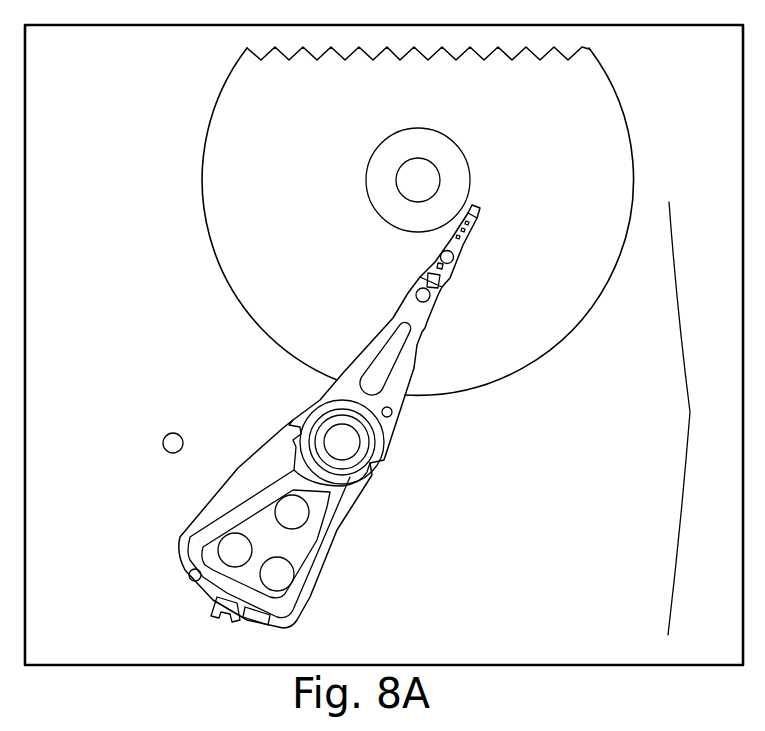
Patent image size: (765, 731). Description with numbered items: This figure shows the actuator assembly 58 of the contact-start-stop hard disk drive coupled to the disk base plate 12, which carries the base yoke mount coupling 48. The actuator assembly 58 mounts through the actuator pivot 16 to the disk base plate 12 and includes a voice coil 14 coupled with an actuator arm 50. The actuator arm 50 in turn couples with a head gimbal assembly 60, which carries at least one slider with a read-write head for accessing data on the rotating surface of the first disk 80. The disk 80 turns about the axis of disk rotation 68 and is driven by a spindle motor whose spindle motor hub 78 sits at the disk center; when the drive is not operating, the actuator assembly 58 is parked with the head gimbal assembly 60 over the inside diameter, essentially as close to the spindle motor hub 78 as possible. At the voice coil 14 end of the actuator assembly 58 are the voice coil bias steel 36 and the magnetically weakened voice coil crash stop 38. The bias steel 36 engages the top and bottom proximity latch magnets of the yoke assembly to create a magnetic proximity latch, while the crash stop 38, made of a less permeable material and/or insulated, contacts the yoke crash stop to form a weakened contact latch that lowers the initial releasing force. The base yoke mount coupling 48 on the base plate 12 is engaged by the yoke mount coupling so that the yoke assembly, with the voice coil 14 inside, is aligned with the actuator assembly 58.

The disk base plate 12 is at (89, 97).
The voice coil 14 is at (318, 598).
The actuator pivot 16 is at (347, 445).
The voice coil bias steel 36 is at (258, 625).
The magnetically weakened voice coil crash stop 38 is at (234, 622).
The base yoke mount coupling 48 is at (169, 455).
The actuator arm 50 is at (343, 372).
The actuator assembly 58 is at (696, 418).
The head gimbal assembly 60 is at (462, 253).
The axis of disk rotation 68 is at (413, 181).
The spindle motor hub 78 is at (472, 182).
The first disk 80 is at (589, 311).